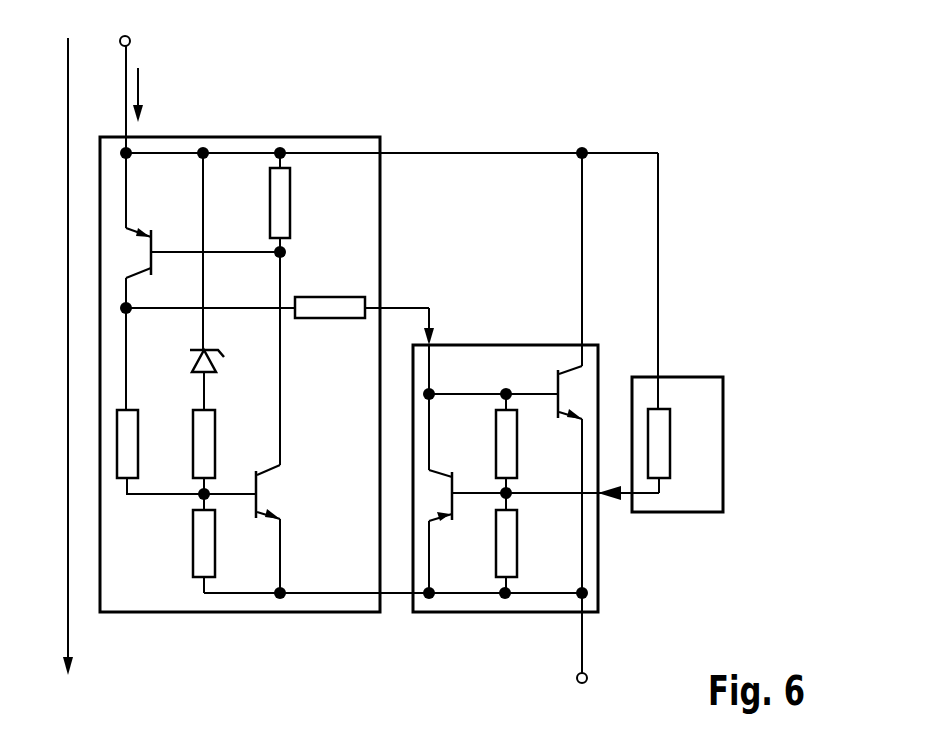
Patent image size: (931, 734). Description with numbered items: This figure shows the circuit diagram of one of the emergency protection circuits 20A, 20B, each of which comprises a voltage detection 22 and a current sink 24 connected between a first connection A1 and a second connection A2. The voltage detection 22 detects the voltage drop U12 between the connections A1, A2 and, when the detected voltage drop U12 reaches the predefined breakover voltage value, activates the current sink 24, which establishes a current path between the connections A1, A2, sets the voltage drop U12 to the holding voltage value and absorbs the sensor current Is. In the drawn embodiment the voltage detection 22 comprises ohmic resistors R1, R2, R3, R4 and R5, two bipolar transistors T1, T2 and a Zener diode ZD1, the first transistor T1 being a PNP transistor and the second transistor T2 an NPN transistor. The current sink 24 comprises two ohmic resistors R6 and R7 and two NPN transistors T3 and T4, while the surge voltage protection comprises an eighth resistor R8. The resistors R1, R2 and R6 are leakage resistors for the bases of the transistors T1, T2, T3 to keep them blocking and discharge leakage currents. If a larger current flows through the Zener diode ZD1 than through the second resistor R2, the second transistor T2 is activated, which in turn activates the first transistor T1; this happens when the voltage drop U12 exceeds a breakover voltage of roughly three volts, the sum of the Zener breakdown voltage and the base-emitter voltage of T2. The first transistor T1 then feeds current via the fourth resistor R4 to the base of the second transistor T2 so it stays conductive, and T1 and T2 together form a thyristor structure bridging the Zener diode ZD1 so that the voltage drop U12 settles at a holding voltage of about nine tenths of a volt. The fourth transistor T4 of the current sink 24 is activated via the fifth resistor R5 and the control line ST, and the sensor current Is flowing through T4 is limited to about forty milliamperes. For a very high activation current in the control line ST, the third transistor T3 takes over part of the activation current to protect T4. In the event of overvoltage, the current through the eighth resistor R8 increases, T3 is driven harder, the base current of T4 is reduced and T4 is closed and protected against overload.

The emergency protection circuit 20A is at (405, 359).
The emergency protection circuit 20B is at (547, 107).
The voltage detection 22 is at (248, 612).
The current sink 24 is at (467, 612).
The first connection A1 is at (143, 89).
The second connection A2 is at (599, 643).
The sensor current Is is at (147, 95).
The voltage drop U12 is at (45, 356).
The control line ST is at (421, 311).
The first transistor T1 is at (198, 233).
The second transistor T2 is at (273, 422).
The third transistor T3 is at (434, 469).
The fourth transistor T4 is at (575, 373).
The first resistor R1 is at (298, 205).
The second resistor R2 is at (221, 551).
The third resistor R3 is at (221, 460).
The fourth resistor R4 is at (186, 401).
The fifth resistor R5 is at (277, 292).
The sixth resistor R6 is at (524, 551).
The seventh resistor R7 is at (524, 452).
The eighth resistor R8 is at (676, 323).
The Zener diode ZD1 is at (193, 361).